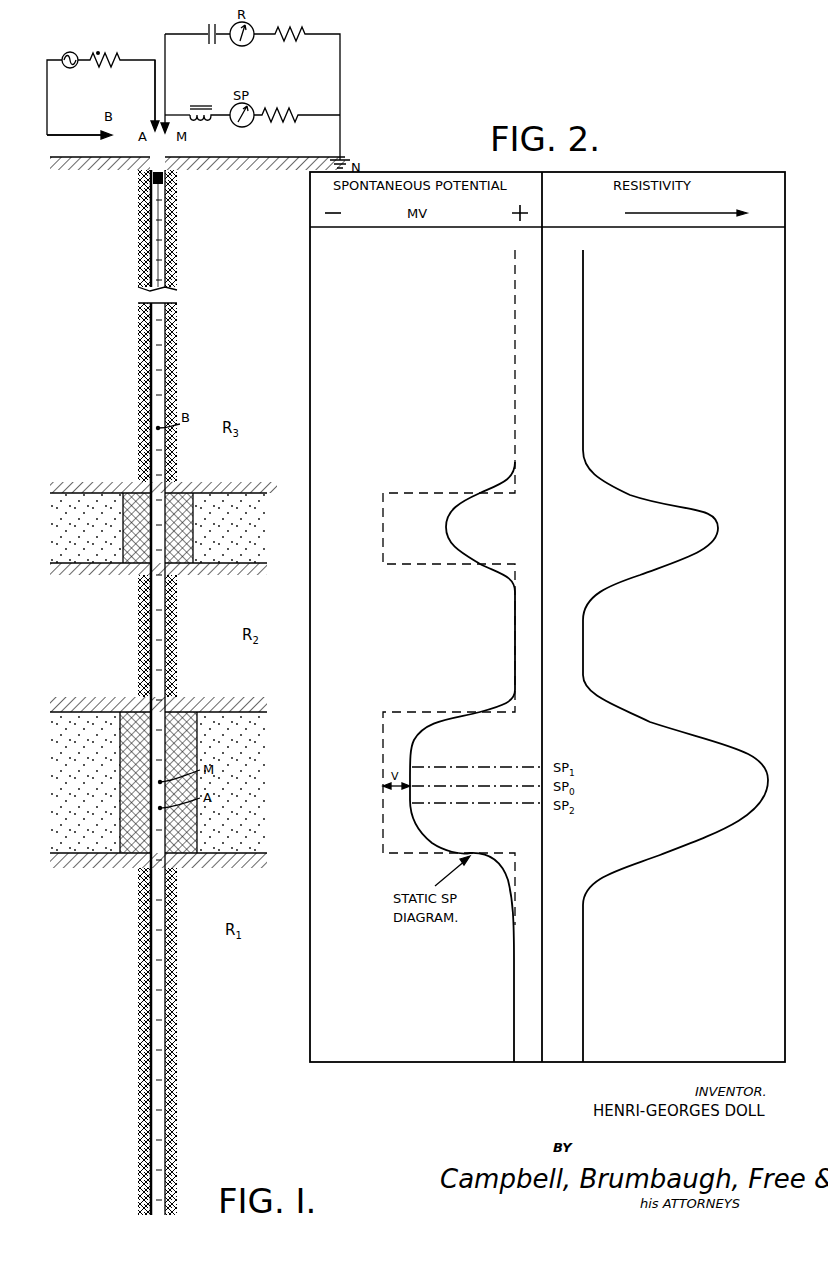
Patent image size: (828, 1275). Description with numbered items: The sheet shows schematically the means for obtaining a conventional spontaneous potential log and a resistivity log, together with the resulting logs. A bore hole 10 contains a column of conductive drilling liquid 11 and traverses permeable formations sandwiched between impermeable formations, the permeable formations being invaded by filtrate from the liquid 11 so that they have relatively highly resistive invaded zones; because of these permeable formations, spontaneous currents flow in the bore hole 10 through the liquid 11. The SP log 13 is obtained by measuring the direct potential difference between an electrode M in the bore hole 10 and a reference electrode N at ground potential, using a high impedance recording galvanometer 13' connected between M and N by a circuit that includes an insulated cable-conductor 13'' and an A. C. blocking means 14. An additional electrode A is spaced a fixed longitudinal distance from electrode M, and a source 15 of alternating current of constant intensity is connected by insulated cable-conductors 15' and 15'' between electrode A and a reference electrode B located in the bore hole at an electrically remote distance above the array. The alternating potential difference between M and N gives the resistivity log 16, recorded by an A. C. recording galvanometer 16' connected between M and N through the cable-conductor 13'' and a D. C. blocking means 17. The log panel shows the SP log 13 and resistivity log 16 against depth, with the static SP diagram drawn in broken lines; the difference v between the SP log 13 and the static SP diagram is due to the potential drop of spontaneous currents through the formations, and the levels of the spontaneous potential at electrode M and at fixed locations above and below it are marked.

In FIG. 1, the bore hole 10 is at (150, 155).
In FIG. 1, the conductive liquid 11 is at (158, 243).
In FIG. 2, the SP log 13 is at (449, 656).
In FIG. 1, the high impedance recording galvanometer 13' is at (285, 103).
In FIG. 1, the insulated cable-conductor 13'' is at (185, 83).
In FIG. 1, the A. C. blocking means 14 is at (200, 117).
In FIG. 1, the source of alternating current 15 is at (103, 82).
In FIG. 1, the insulated cable-conductor 15' is at (77, 121).
In FIG. 1, the insulated cable-conductor 15'' is at (142, 94).
In FIG. 2, the resistivity log 16 is at (675, 656).
In FIG. 1, the A. C. recording galvanometer 16' is at (285, 81).
In FIG. 1, the D. C. blocking means 17 is at (215, 44).